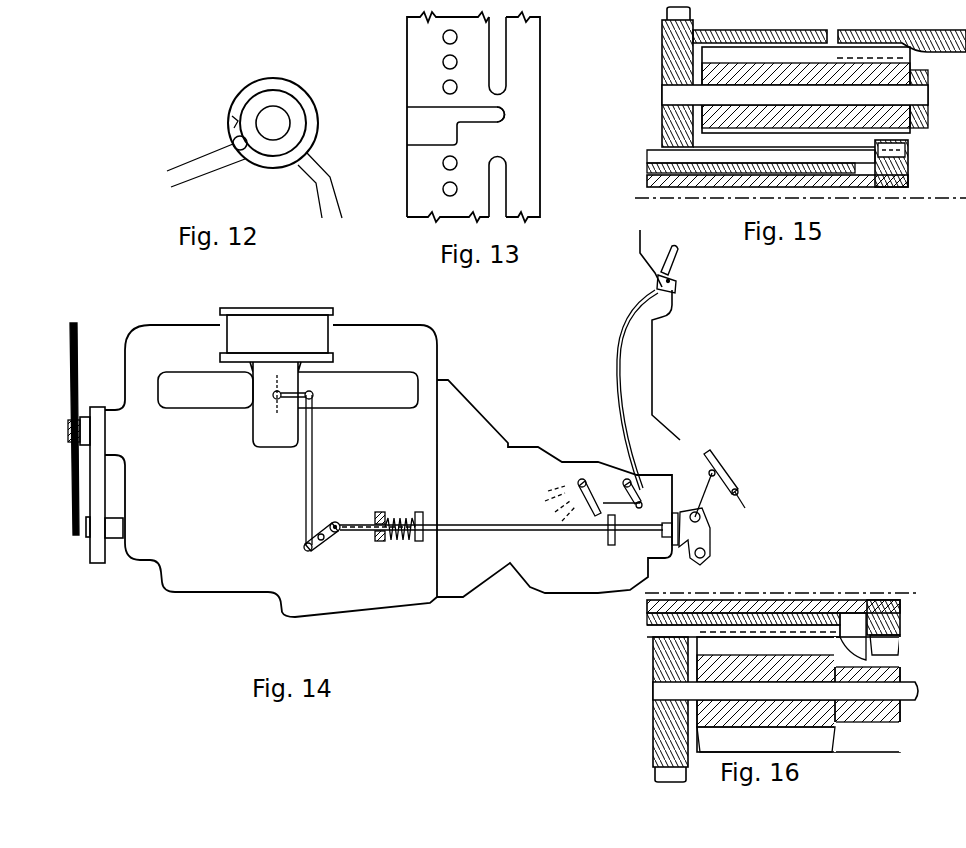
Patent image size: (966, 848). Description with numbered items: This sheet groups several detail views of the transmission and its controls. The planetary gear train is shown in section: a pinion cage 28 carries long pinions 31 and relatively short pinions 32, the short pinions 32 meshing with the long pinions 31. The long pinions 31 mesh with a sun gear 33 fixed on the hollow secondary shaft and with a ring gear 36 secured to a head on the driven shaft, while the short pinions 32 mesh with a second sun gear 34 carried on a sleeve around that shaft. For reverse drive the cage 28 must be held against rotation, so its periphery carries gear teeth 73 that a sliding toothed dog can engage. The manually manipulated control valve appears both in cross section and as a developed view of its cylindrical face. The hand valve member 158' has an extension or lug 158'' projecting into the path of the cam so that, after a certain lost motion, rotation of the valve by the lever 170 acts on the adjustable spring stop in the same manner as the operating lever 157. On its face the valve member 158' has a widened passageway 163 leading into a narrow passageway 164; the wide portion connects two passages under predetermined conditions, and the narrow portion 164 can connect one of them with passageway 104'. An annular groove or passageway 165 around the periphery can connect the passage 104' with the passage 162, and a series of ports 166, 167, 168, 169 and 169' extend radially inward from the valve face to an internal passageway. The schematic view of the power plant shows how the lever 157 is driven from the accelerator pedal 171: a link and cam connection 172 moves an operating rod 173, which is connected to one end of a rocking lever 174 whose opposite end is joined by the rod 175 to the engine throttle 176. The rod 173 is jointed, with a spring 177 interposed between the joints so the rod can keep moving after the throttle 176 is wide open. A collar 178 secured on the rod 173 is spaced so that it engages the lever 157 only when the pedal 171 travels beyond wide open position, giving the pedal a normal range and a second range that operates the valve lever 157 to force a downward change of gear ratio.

In FIG. 15, the pinion cage 28 is at (662, 86).
In FIG. 16, the pinion cage 28 is at (653, 684).
In FIG. 15, the long pinions 31 is at (797, 56).
In FIG. 16, the short pinions 32 is at (900, 672).
In FIG. 15, the sun gear 33 is at (910, 181).
In FIG. 16, the sun gear 33 is at (900, 620).
In FIG. 15, the sun gear 34 is at (848, 165).
In FIG. 16, the sun gear 34 is at (868, 648).
In FIG. 15, the ring gear 36 is at (880, 30).
In FIG. 15, the gear teeth 73 is at (664, 14).
In FIG. 16, the gear teeth 73 is at (656, 770).
In FIG. 12, the passageway 104' is at (313, 189).
In FIG. 14, the operating lever 157 is at (593, 497).
In FIG. 12, the hand valve member 158' is at (294, 121).
In FIG. 13, the hand valve member 158' is at (496, 117).
In FIG. 13, the extension or lug 158'' is at (537, 56).
In FIG. 12, the passage 162 is at (212, 160).
In FIG. 13, the widened passageway 163 is at (425, 125).
In FIG. 12, the narrow passageway 164 is at (233, 141).
In FIG. 13, the narrow passageway 164 is at (492, 114).
In FIG. 12, the annular groove 165 is at (293, 88).
In FIG. 13, the annular groove 165 is at (497, 180).
In FIG. 13, the port 166 is at (443, 189).
In FIG. 13, the port 167 is at (443, 164).
In FIG. 13, the port 168 is at (443, 88).
In FIG. 13, the port 169 is at (419, 62).
In FIG. 13, the hole 169' is at (407, 35).
In FIG. 14, the lever 170 is at (640, 500).
In FIG. 14, the accelerator pedal 171 is at (722, 474).
In FIG. 14, the link and cam connection 172 is at (708, 540).
In FIG. 14, the operating rod 173 is at (555, 533).
In FIG. 14, the rocking lever 174 is at (326, 541).
In FIG. 14, the rod 175 is at (305, 498).
In FIG. 14, the throttle 176 is at (272, 395).
In FIG. 14, the spring 177 is at (390, 545).
In FIG. 14, the collar 178 is at (612, 546).